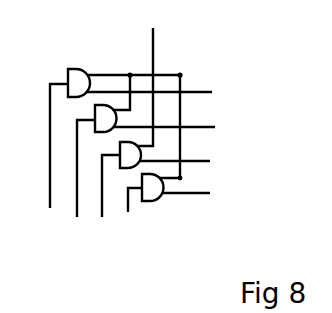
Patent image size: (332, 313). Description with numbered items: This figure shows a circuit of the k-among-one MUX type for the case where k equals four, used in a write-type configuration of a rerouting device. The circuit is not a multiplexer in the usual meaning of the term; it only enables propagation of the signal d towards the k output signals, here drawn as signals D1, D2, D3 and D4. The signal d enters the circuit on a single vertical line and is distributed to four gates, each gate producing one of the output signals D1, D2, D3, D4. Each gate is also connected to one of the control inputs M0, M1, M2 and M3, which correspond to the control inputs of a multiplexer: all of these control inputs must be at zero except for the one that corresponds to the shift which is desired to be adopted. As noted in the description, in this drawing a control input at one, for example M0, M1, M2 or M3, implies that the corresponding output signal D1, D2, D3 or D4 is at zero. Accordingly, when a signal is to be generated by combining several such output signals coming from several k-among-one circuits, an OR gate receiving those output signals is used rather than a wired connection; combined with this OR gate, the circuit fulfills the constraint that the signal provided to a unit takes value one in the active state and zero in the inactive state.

The signal d is at (135, 104).
The signal D1 is at (140, 209).
The signal D2 is at (108, 194).
The signal D3 is at (79, 176).
The signal D4 is at (47, 155).
The control input M0 is at (161, 71).
The control input M1 is at (179, 116).
The control input M2 is at (191, 162).
The control input M3 is at (202, 205).